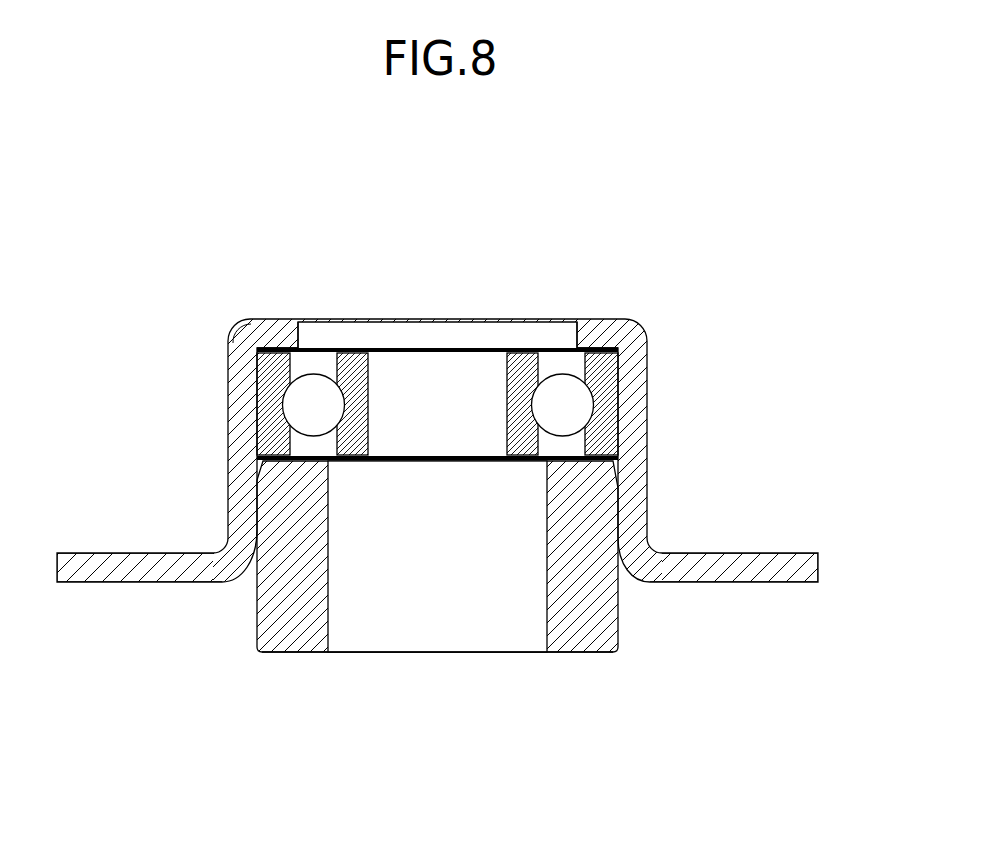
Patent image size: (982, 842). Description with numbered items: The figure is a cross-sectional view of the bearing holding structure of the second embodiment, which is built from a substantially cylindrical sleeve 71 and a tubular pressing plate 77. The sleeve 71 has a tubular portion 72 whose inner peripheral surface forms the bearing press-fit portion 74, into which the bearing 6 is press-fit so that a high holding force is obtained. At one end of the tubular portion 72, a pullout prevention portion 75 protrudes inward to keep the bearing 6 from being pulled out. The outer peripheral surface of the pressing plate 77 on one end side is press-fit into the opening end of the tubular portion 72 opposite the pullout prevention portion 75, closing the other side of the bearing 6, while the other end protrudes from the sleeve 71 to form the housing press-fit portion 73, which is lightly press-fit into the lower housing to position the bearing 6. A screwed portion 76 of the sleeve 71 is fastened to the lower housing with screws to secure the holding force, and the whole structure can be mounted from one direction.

The bearing 6 is at (369, 436).
The sleeve 71 is at (634, 324).
The tubular portion 72 is at (438, 471).
The housing press-fit portion 73 is at (473, 587).
The bearing press-fit portion 74 is at (488, 538).
The pullout prevention portion 75 is at (272, 321).
The screwed portion 76 is at (108, 583).
The pressing plate 77 is at (292, 653).